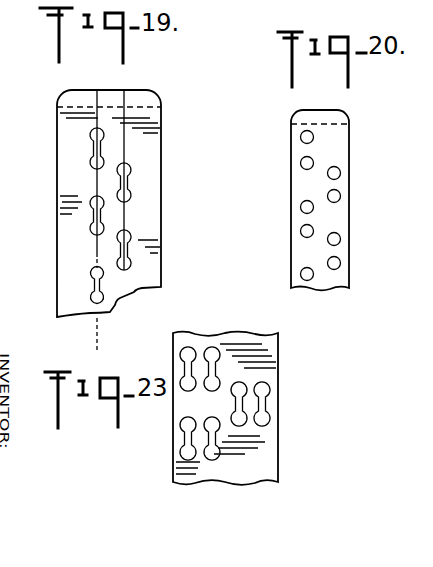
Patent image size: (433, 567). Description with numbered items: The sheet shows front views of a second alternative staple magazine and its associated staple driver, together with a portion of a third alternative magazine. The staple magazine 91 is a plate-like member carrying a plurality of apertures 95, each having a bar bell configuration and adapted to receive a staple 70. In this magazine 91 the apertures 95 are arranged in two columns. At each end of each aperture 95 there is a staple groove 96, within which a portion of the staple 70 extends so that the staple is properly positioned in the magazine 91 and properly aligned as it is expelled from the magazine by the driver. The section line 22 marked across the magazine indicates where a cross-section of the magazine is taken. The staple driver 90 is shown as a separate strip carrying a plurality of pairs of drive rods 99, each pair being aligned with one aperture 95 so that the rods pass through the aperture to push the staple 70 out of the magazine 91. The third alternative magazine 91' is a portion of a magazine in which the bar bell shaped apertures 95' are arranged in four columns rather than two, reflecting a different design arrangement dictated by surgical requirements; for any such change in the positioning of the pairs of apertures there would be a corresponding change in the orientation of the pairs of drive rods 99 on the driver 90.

In FIG. 19, the staple 70 is at (93, 145).
In FIG. 19, the staple magazine 91 is at (53, 165).
In FIG. 19, the apertures 95 is at (146, 180).
In FIG. 19, the staple groove 96 is at (126, 230).
In FIG. 19, the section line 22 is at (114, 250).
In FIG. 20, the staple driver 90 is at (351, 226).
In FIG. 20, the drive rods 99 is at (341, 195).
In FIG. 23, the laminate layer 91' is at (254, 408).
In FIG. 23, the slots 95' is at (255, 403).